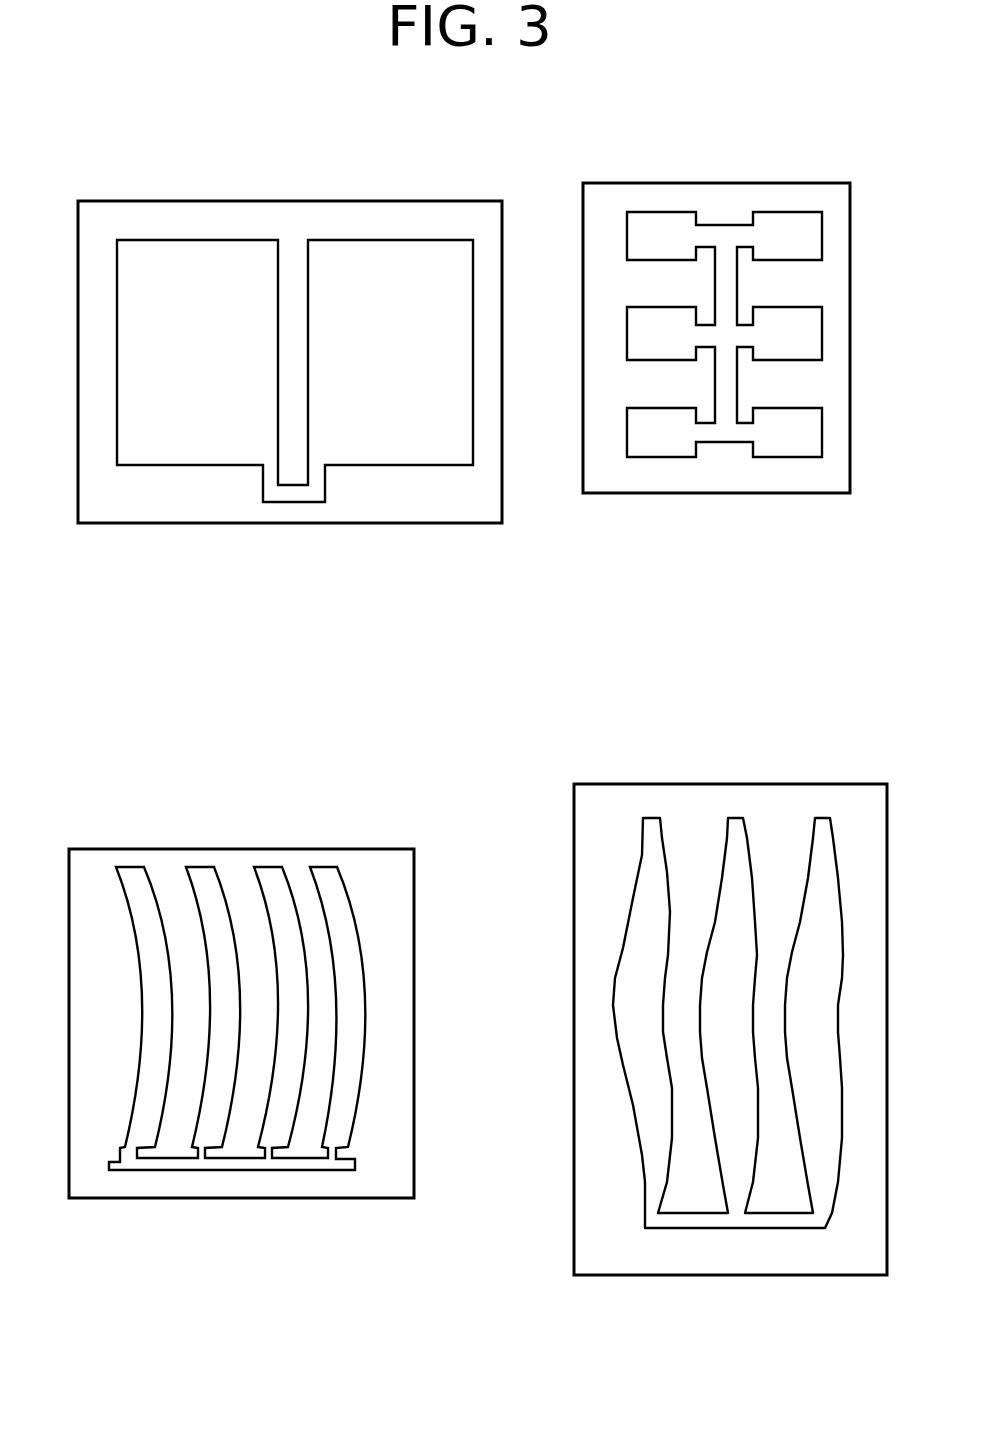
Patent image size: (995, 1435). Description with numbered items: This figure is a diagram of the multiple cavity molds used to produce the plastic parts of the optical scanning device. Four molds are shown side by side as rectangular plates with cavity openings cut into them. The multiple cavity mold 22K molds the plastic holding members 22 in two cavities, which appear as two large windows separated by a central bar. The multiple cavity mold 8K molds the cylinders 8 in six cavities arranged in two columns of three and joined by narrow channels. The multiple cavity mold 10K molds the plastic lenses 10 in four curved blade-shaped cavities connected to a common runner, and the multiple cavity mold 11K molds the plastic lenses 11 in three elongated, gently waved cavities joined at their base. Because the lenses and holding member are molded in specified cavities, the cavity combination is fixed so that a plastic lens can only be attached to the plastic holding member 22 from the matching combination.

The plastic holding member 22 is at (290, 349).
The multiple cavity mold for holding member 22K is at (442, 503).
The cylinder 8 is at (716, 335).
The multiple cavity mold for cylinder 8K is at (733, 483).
The plastic lens 10 is at (241, 1029).
The multiple cavity mold for plastic lens 10K is at (346, 1182).
The plastic lens 11 is at (730, 1033).
The multiple cavity mold for plastic lens 11K is at (795, 1262).